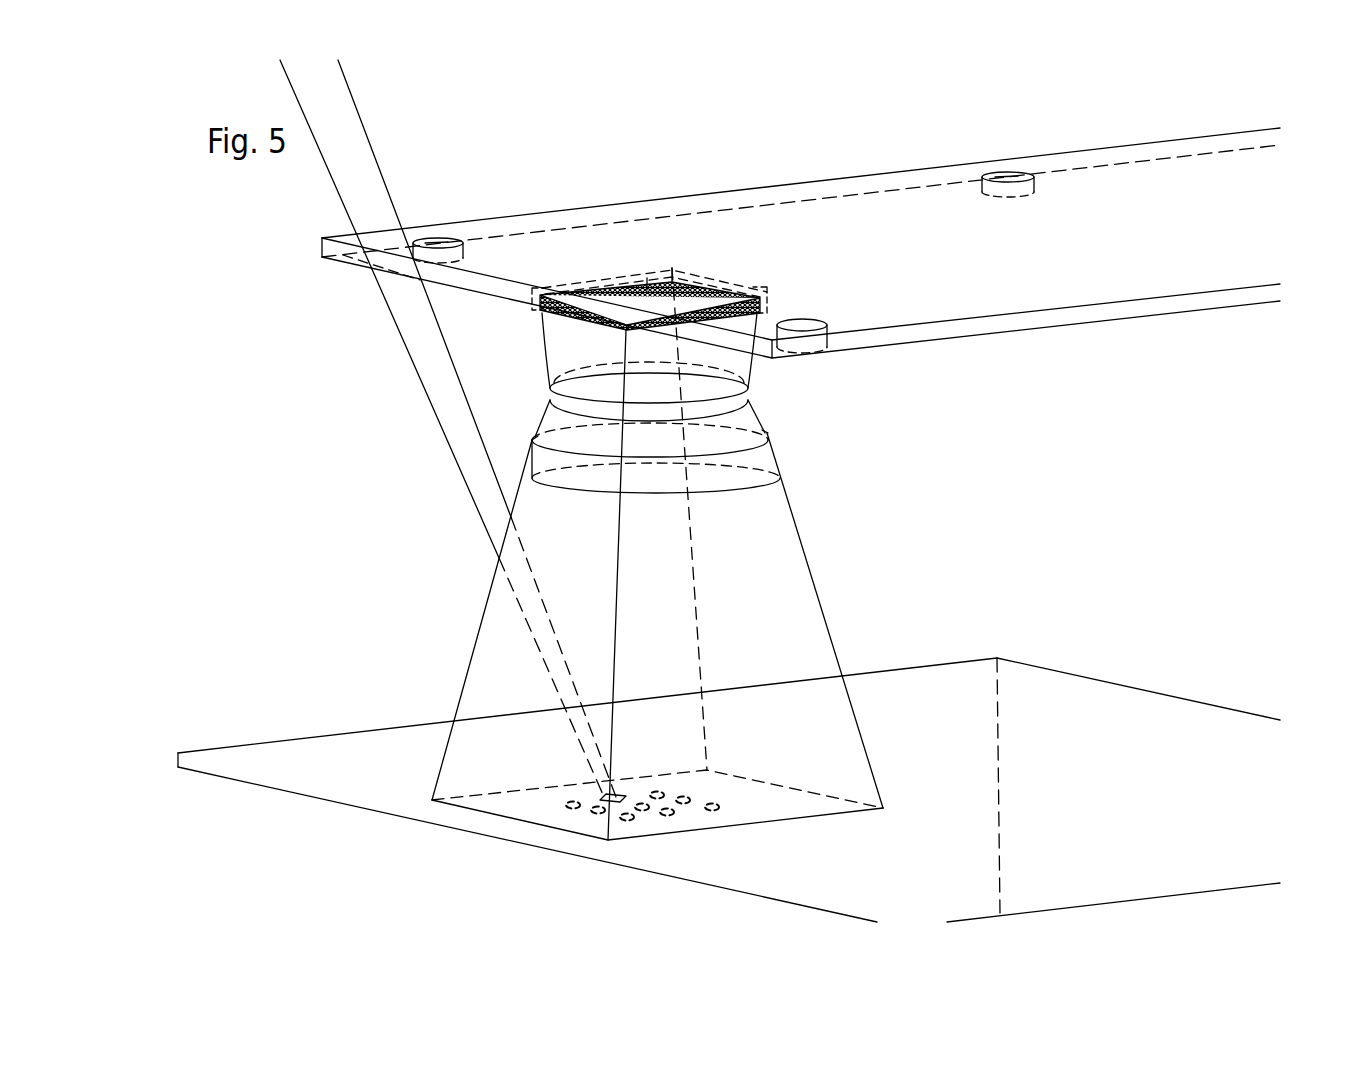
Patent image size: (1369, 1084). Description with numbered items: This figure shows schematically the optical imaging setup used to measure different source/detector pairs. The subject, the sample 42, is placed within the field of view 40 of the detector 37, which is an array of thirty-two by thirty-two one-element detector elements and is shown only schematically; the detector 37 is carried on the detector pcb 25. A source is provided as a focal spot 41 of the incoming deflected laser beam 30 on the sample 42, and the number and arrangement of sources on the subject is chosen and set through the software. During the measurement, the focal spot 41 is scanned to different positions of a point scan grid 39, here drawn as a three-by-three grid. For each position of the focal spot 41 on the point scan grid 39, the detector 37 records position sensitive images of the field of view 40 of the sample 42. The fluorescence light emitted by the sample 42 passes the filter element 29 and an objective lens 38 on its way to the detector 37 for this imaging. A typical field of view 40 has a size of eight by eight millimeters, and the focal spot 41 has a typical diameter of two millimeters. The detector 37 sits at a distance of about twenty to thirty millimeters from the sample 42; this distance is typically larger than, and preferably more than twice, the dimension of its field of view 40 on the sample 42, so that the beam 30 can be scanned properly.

The detector pcb 25 is at (988, 292).
The filter element 29 is at (778, 462).
The deflected laser beam 30 is at (437, 390).
The detector 37 is at (557, 313).
The objective lens 38 is at (757, 403).
The point scan grid 39 is at (860, 590).
The field of view 40 is at (890, 640).
The focal spot 41 is at (607, 797).
The sample 42 is at (363, 753).